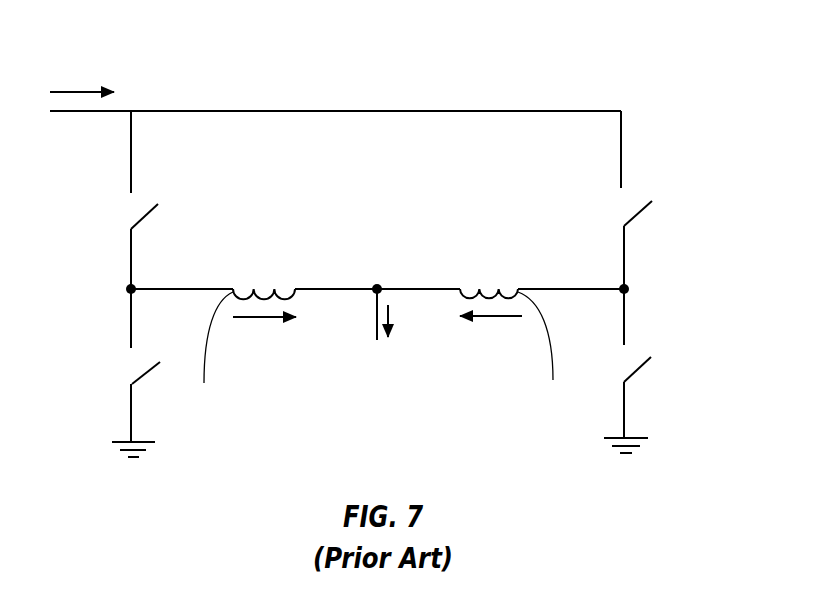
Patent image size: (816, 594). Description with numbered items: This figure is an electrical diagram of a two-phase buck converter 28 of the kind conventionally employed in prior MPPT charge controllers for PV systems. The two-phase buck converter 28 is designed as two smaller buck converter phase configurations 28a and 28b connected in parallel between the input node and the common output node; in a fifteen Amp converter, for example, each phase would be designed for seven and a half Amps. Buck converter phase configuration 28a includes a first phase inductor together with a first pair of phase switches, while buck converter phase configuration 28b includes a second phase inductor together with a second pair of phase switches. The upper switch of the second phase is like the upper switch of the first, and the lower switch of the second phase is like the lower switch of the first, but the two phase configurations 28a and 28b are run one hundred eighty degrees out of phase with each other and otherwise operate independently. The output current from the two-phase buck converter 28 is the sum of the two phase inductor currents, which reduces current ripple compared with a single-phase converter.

The two-phase buck converter 28 is at (448, 74).
The buck converter phase configuration 28a is at (264, 224).
The buck converter phase configuration 28b is at (506, 224).